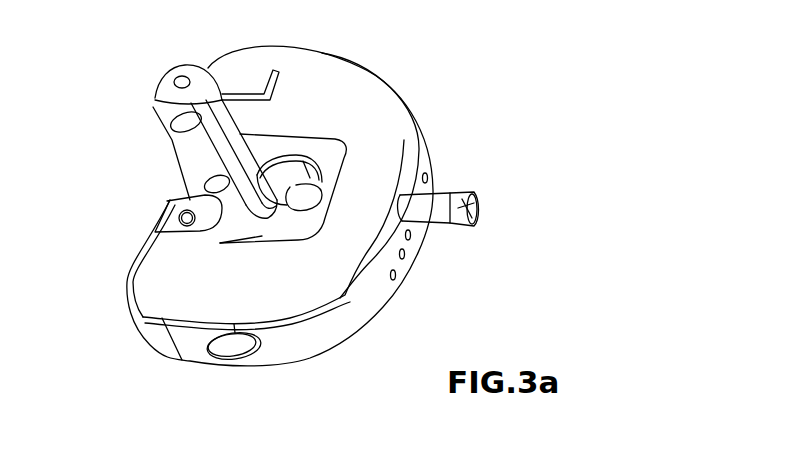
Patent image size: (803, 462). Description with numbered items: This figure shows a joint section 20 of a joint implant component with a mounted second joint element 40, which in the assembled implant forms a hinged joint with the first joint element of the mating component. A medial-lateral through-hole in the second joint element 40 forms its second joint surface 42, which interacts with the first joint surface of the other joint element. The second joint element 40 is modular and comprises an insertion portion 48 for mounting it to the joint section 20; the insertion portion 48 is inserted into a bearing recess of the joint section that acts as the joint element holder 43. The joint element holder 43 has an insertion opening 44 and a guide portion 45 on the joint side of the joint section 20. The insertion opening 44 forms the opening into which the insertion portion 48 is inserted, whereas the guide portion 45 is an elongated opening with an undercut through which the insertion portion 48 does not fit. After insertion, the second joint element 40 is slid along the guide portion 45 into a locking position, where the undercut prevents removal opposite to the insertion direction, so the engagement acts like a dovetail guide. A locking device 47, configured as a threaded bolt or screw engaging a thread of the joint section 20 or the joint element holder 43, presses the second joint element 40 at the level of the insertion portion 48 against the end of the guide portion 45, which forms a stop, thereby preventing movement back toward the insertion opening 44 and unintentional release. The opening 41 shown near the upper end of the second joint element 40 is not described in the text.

The joint section 20 is at (136, 328).
The second joint element 40 is at (153, 123).
The upper slot 41 is at (178, 117).
The second joint surface 42 is at (205, 181).
The joint element holder 43 is at (334, 150).
The insertion opening 44 is at (318, 169).
The guide portion 45 is at (258, 221).
The locking device 47 is at (477, 205).
The insertion portion 48 is at (220, 243).